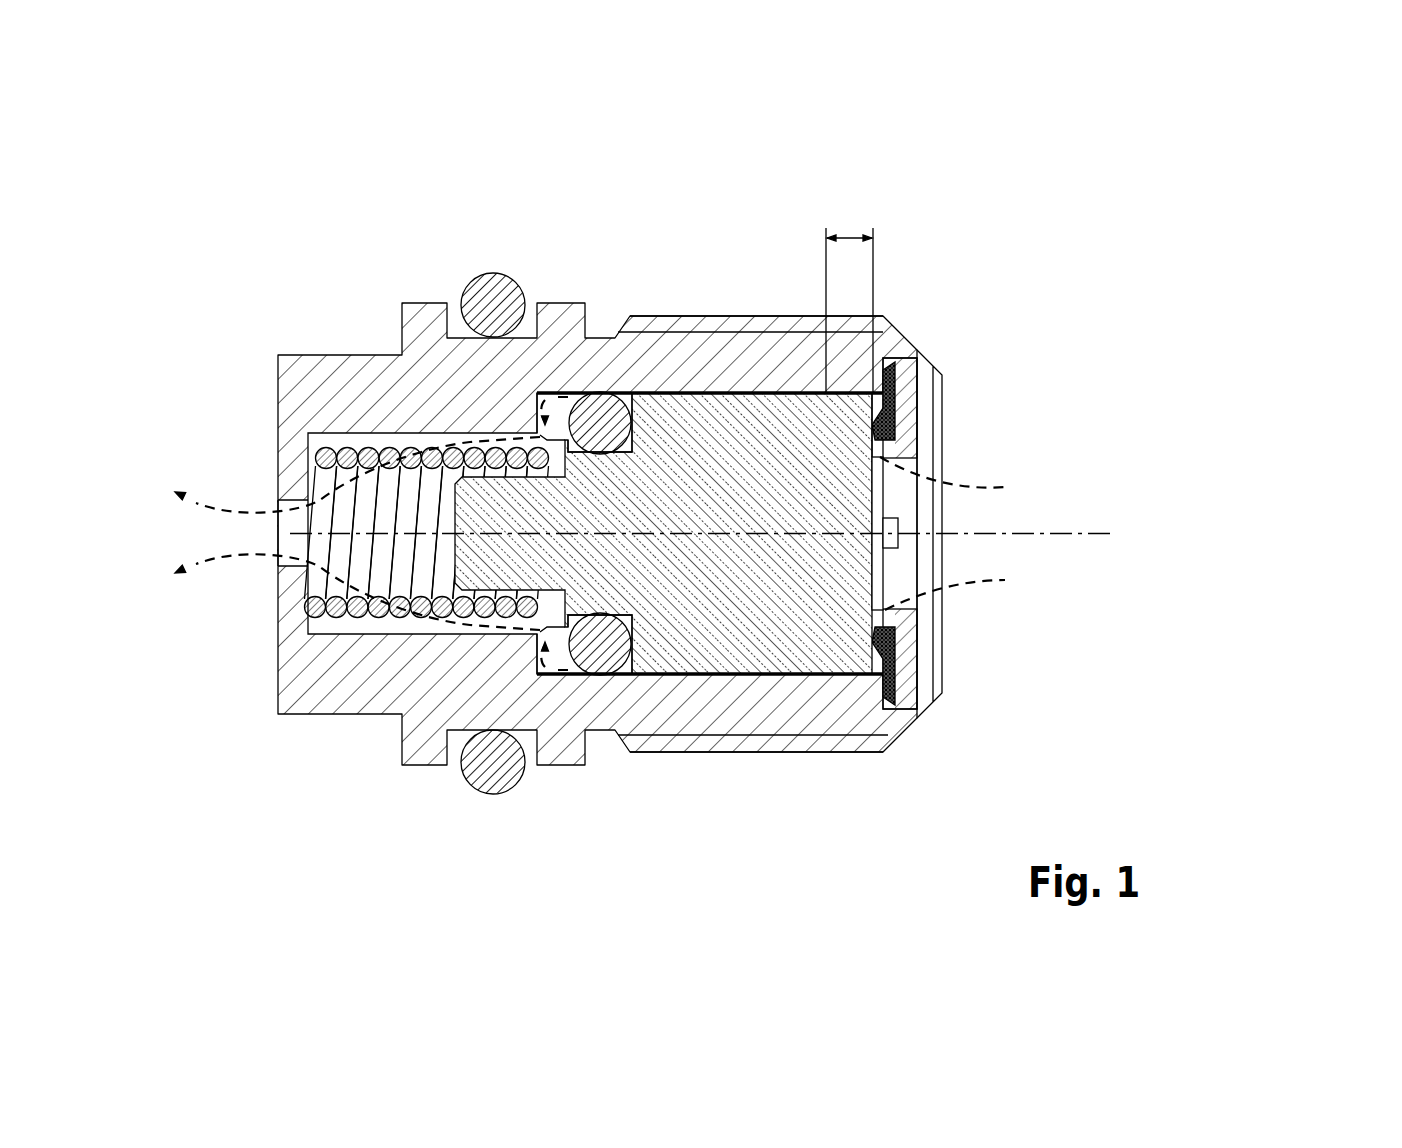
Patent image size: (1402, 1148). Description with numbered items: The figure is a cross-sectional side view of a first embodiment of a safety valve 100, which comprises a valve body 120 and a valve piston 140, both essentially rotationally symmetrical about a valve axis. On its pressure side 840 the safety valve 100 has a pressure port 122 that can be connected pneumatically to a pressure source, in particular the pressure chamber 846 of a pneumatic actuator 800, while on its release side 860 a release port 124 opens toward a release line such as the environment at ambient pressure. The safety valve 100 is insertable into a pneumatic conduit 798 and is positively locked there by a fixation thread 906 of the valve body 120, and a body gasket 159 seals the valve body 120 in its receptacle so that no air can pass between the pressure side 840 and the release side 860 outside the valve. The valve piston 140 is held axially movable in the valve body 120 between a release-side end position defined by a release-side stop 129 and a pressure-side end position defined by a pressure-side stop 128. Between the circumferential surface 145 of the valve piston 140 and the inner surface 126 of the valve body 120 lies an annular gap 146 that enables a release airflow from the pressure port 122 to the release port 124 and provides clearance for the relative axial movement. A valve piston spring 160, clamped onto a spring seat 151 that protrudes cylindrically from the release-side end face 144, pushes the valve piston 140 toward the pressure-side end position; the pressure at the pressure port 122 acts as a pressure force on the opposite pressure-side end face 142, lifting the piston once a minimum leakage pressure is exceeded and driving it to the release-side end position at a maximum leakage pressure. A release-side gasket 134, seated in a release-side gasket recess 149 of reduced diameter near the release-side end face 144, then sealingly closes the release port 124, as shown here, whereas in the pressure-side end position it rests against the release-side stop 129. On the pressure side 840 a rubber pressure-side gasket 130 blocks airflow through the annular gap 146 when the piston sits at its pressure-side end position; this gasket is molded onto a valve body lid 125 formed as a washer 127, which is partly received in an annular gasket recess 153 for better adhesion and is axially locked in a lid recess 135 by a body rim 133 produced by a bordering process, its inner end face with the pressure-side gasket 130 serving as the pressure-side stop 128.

The safety valve 100 is at (1052, 125).
The valve body 120 is at (320, 690).
The pressure port 122 is at (880, 579).
The release port 124 is at (278, 537).
The valve body lid 125 is at (913, 668).
The inner surface 126 is at (691, 660).
The washer 127 is at (906, 659).
The pressure-side stop 128 is at (862, 426).
The release-side stop 129 is at (560, 438).
The pressure-side gasket 130 is at (848, 660).
The body rim 133 is at (940, 346).
The release-side gasket 134 is at (598, 405).
The lid recess 135 is at (926, 381).
The valve piston 140 is at (737, 658).
The pressure-side end face 142 is at (893, 622).
The release-side end face 144 is at (503, 628).
The circumferential surface 145 is at (672, 678).
The annular gap 146 is at (624, 684).
The release-side gasket recess 149 is at (560, 401).
The spring seat 151 is at (488, 438).
The annular gasket recess 153 is at (866, 396).
The body gasket 159 is at (497, 290).
The valve piston spring 160 is at (385, 452).
The pneumatic conduit 798 is at (275, 308).
The pneumatic actuator 800 is at (942, 533).
The pressure side 840 is at (1045, 354).
The pressure chamber 846 is at (1018, 556).
The release side 860 is at (178, 452).
The fixation thread 906 is at (781, 758).